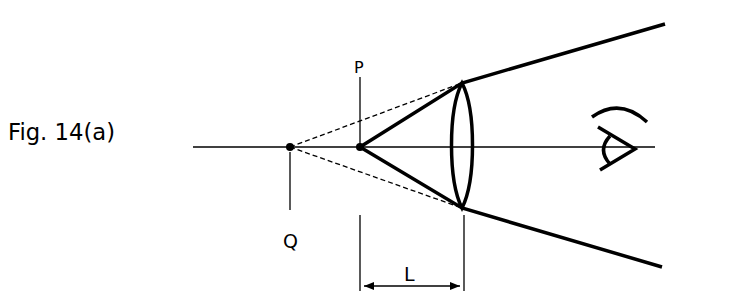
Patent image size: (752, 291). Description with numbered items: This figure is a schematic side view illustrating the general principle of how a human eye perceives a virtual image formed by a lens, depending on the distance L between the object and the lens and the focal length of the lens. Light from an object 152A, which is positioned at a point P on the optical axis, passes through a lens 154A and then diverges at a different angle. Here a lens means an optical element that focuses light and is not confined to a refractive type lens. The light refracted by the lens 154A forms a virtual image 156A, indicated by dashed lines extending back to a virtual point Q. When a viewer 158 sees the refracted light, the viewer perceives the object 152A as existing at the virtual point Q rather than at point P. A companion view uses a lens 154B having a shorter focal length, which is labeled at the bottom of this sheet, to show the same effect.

The object 152A is at (368, 128).
The lens 154A is at (468, 75).
The lens 154B is at (540, 287).
The virtual image 156A is at (293, 128).
The viewer 158 is at (650, 102).